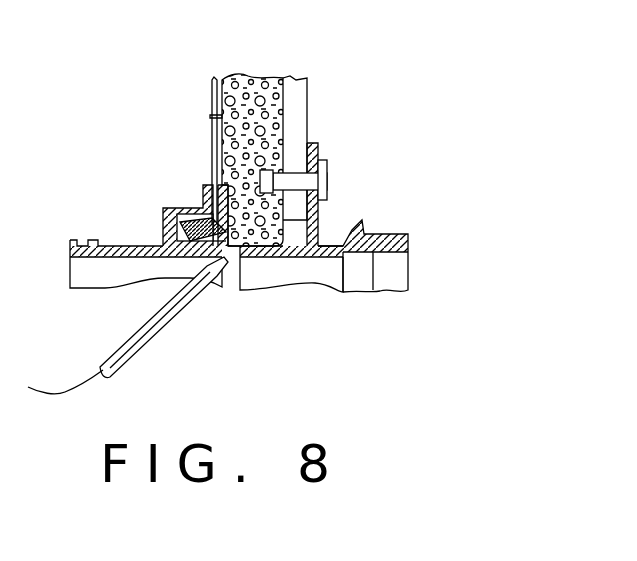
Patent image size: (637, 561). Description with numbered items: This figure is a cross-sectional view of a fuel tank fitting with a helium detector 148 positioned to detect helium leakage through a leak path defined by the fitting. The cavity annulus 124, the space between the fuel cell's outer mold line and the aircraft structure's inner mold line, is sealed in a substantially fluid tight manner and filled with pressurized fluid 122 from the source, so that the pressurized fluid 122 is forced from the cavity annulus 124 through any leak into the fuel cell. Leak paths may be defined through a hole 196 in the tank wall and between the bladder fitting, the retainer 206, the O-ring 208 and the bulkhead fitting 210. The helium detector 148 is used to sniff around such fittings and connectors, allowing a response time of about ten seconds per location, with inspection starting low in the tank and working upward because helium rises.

The pressurized fluid 122 is at (255, 76).
The cavity annulus 124 is at (303, 108).
The hole 196 is at (212, 108).
The O-ring 208 is at (190, 208).
The retainer 206 is at (128, 246).
The bulkhead fitting 210 is at (387, 233).
The helium detector 148 is at (163, 333).